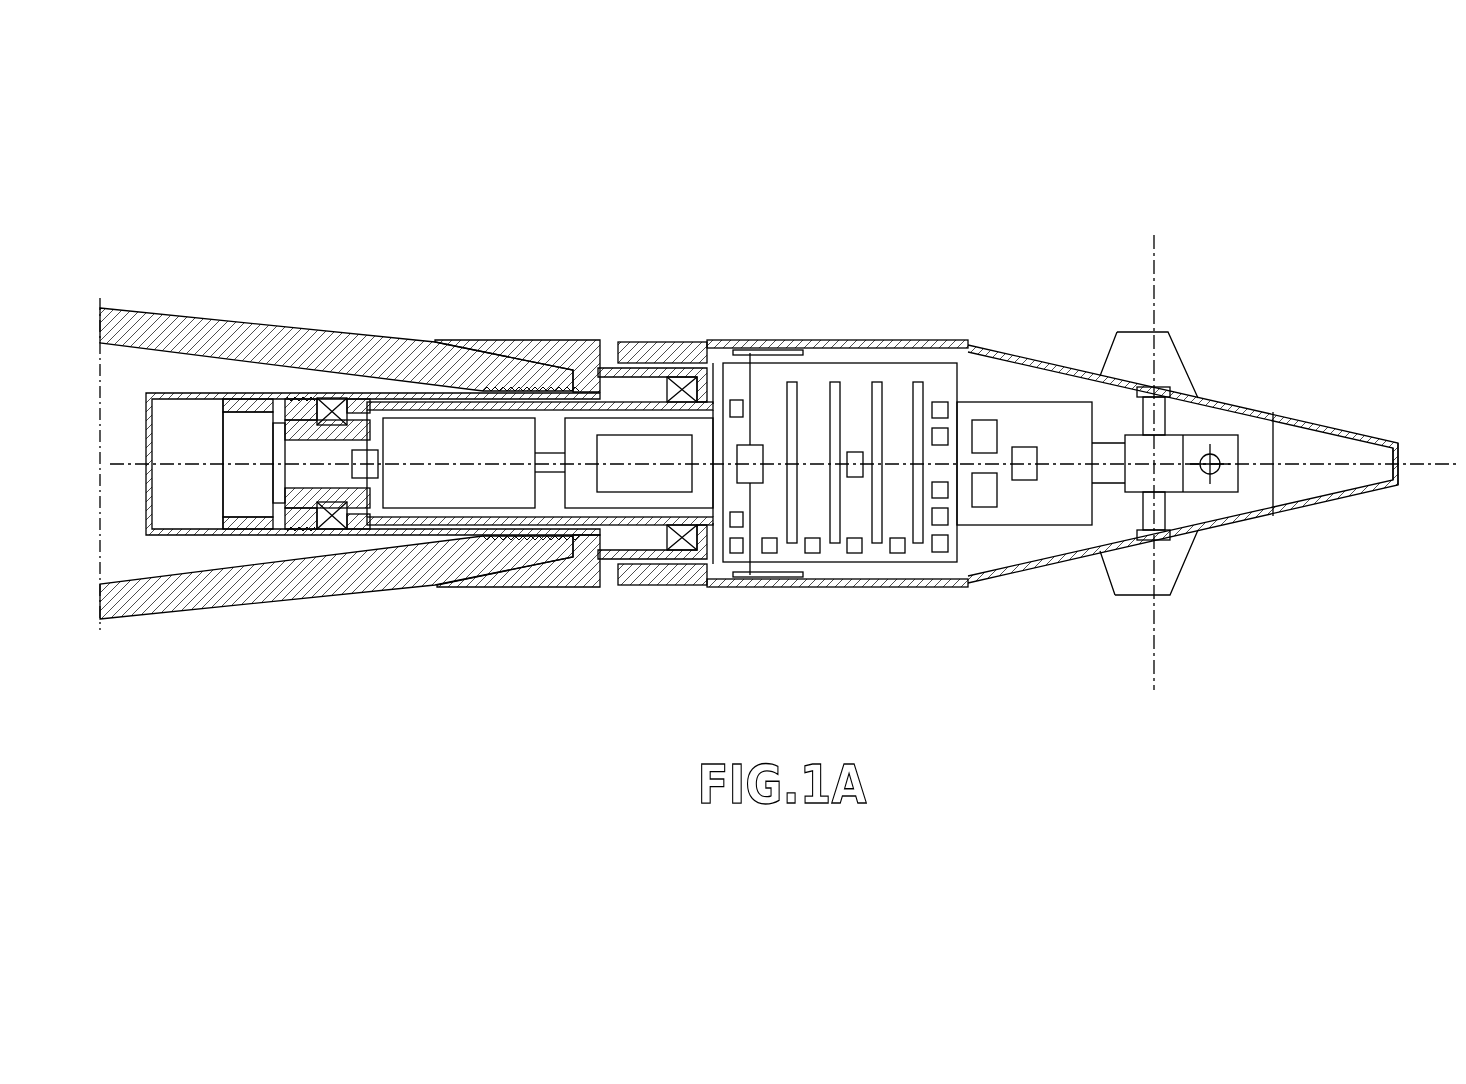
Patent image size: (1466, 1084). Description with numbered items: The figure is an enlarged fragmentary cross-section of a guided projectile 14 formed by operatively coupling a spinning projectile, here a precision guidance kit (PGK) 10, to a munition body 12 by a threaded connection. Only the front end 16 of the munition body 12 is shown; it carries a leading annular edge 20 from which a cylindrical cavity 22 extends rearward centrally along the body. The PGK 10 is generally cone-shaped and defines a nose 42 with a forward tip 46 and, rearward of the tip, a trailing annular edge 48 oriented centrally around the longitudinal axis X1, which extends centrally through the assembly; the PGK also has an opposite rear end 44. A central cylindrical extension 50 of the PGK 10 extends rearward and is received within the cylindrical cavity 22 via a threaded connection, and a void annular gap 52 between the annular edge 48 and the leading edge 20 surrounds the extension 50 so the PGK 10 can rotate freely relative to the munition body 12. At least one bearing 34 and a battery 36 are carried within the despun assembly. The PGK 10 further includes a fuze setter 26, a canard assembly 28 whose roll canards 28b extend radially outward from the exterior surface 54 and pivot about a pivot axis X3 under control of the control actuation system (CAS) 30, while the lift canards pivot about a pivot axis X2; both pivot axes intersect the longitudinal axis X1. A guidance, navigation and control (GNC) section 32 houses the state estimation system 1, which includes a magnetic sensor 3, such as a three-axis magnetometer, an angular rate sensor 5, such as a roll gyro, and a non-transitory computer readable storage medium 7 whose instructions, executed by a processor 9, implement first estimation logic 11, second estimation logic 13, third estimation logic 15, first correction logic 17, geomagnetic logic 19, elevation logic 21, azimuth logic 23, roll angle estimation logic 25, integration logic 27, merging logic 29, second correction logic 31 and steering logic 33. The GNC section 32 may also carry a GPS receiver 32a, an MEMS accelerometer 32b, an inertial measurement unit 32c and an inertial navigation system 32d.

The state estimation system 1 is at (833, 580).
The magnetic sensor 3 is at (380, 461).
The angular rate sensor 5 is at (866, 463).
The non-transitory computer readable storage medium 7 is at (651, 479).
The processor 9 is at (828, 406).
The spinning projectile / precision guidance kit (PGK) 10 is at (856, 350).
The first estimation logic 11 is at (946, 431).
The munition body 12 is at (200, 303).
The second estimation logic 13 is at (946, 406).
The guided projectile 14 is at (1068, 118).
The third estimation logic 15 is at (944, 492).
The front end 16 is at (421, 324).
The first correction logic 17 is at (942, 518).
The geomagnetic logic 19 is at (940, 554).
The annular edge 20 is at (590, 374).
The elevation logic 21 is at (897, 555).
The cylindrical cavity 22 is at (252, 385).
The azimuth logic 23 is at (855, 555).
The roll angle estimation logic 25 is at (812, 555).
The fuze setter 26 is at (1339, 414).
The integration logic 27 is at (770, 555).
The canard assembly 28 is at (1185, 313).
The roll canard 28b is at (1128, 343).
The merging logic 29 is at (739, 555).
The control actuation system (CAS) 30 is at (1218, 445).
The second correction logic 31 is at (731, 517).
The guidance, navigation and control (GNC) section 32 is at (864, 392).
The GPS receiver 32a is at (764, 456).
The MEMS accelerometer 32b is at (988, 434).
The inertial measurement unit (IMU) 32c is at (1026, 480).
The inertial navigation system (INS) 32d is at (988, 493).
The steering logic 33 is at (737, 399).
The bearing 34 is at (330, 396).
The battery 36 is at (490, 479).
The nose / front end 42 is at (1417, 487).
The rear end 44 is at (126, 524).
The forward tip 46 is at (1399, 448).
The annular edge 48 is at (620, 584).
The central cylindrical extension 50 is at (298, 547).
The gap 52 is at (616, 350).
The exterior surface 54 is at (682, 587).
The longitudinal axis X1 is at (788, 435).
The pivot axis X2 is at (1212, 466).
The pivot axis X3 is at (1136, 445).